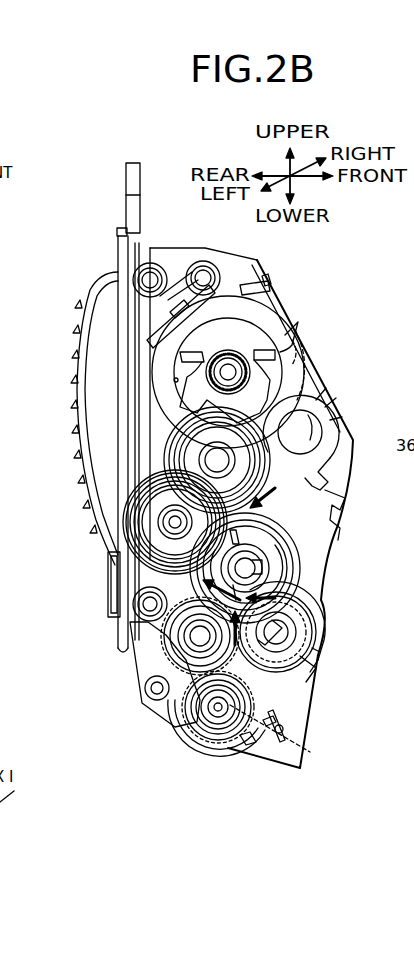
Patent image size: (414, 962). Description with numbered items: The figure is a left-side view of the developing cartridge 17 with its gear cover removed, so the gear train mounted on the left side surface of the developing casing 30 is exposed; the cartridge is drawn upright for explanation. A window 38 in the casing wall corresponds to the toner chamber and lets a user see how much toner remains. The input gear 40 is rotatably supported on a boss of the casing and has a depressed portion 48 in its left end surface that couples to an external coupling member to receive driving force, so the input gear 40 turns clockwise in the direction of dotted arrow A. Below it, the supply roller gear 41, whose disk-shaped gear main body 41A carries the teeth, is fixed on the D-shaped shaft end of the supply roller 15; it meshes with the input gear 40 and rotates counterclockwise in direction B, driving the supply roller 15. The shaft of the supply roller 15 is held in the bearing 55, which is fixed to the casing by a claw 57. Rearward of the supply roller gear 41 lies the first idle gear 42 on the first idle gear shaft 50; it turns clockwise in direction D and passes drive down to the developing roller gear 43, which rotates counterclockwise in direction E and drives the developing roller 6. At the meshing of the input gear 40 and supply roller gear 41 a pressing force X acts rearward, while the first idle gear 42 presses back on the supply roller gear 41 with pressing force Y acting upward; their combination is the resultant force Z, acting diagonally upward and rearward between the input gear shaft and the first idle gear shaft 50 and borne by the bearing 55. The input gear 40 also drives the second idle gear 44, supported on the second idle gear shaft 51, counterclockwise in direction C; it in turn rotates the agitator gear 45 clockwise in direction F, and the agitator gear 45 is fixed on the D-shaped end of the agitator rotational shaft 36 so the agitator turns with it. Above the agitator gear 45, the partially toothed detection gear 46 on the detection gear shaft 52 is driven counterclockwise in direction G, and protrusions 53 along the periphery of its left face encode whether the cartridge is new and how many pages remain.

The developing casing 30 is at (286, 298).
The protrusions 53 is at (250, 356).
The detection gear 46 is at (291, 340).
The dotted arrow G is at (320, 372).
The window 38 is at (310, 424).
The detection gear shaft 52 is at (214, 372).
The agitator gear 45 is at (200, 452).
The rotational shaft 36 is at (205, 460).
The dotted arrow C is at (140, 462).
The second idle gear 44 is at (124, 510).
The second idle gear shaft 51 is at (168, 522).
The resultant force Z is at (137, 596).
The pressing force Y is at (135, 606).
The first idle gear shaft 50 is at (190, 636).
The first idle gear 42 is at (172, 662).
The depressed portion 48 is at (276, 568).
The input gear 40 is at (300, 575).
The pressing force X is at (315, 590).
The bearing 55 is at (318, 622).
The supply roller gear 41 is at (286, 632).
The dotted arrow B is at (308, 662).
The claw 57 is at (305, 662).
The supply roller 15 is at (272, 660).
The gear main body 41A is at (268, 665).
The dotted arrow E is at (296, 742).
The dotted arrow D is at (270, 718).
The developing roller 6 is at (201, 752).
The developing roller gear 43 is at (247, 746).
The developing cartridge 17 is at (252, 837).
The dotted arrow A is at (272, 506).
The dotted arrow F is at (300, 487).